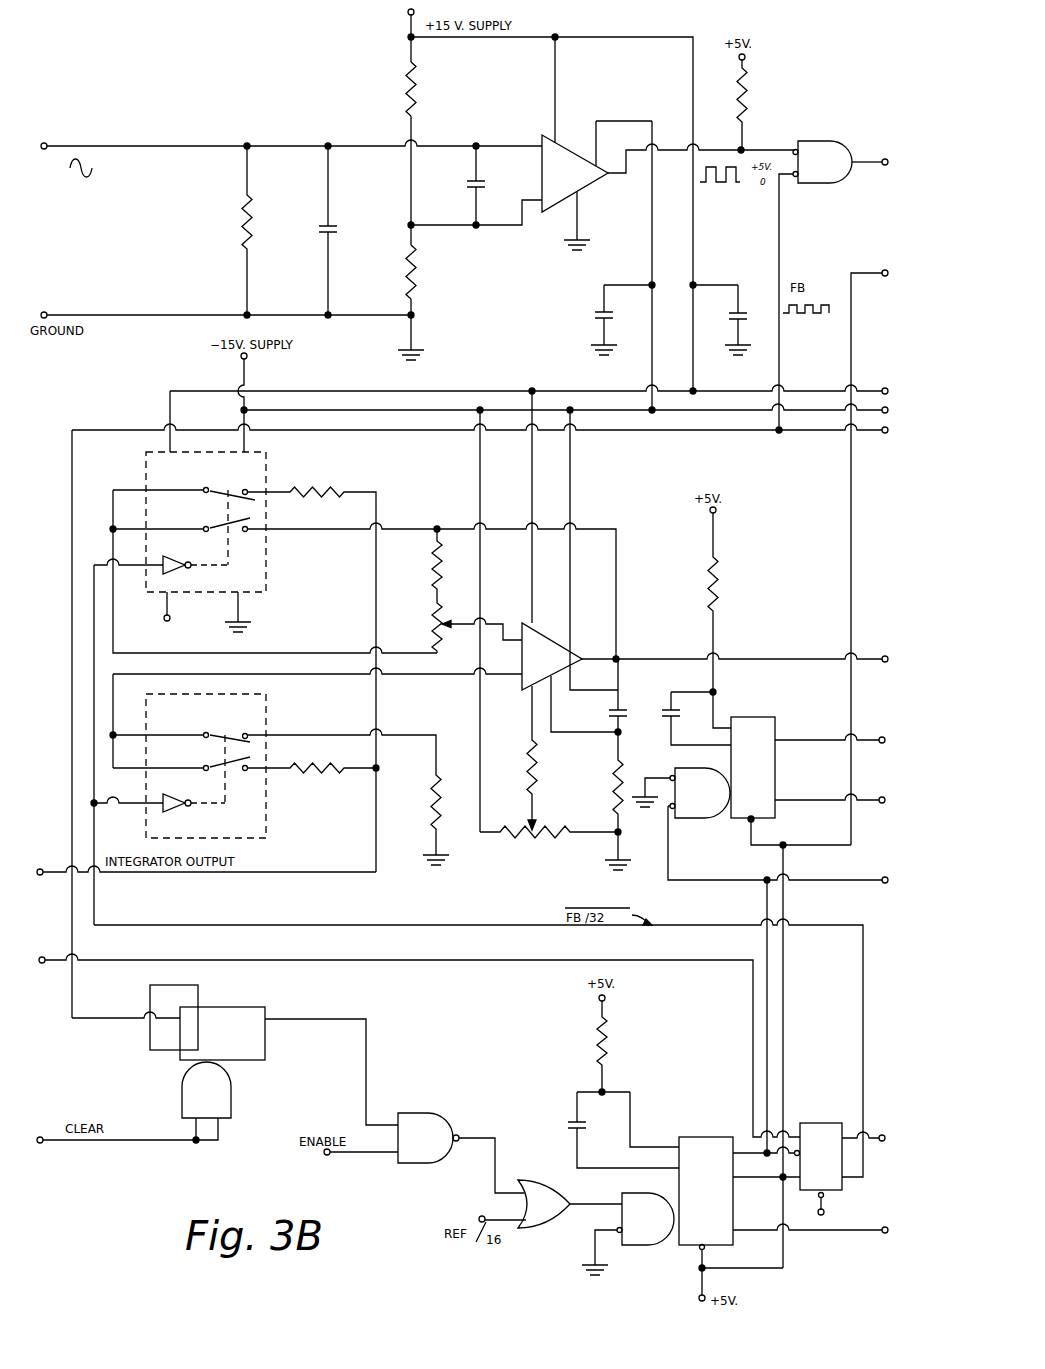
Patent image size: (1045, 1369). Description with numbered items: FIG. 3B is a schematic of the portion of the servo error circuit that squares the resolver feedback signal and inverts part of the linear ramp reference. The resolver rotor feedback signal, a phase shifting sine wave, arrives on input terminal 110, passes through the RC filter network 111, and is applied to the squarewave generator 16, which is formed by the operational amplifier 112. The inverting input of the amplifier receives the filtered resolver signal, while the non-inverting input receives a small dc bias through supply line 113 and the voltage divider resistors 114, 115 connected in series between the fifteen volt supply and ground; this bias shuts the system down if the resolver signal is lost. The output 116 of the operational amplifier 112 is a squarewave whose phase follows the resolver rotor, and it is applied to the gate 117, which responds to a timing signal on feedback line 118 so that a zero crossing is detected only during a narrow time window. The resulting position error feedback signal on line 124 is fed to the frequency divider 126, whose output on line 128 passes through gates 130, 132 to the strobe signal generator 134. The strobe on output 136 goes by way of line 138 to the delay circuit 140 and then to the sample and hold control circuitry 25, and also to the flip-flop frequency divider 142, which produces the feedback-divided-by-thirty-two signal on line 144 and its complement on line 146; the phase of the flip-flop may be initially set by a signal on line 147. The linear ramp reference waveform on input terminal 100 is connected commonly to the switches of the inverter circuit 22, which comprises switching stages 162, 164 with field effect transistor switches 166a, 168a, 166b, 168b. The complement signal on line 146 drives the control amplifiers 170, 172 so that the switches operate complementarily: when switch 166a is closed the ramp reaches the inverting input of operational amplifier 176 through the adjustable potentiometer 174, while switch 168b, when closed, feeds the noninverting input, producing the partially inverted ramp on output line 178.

The input terminal 110 is at (44, 143).
The RC filter network 111 is at (228, 202).
The operational amplifier 112 is at (568, 165).
The supply line 113 is at (344, 22).
The squarewave generator 16 is at (333, 66).
The voltage divider resistor 114 is at (415, 64).
The voltage divider resistor 115 is at (415, 278).
The output 116 is at (610, 176).
The gate 117 is at (832, 148).
The feedback line 118 is at (780, 226).
The line 124 is at (105, 430).
The inverter circuit 22 is at (355, 482).
The sample and hold control circuitry 25 is at (763, 542).
The switching stage 162 is at (266, 470).
The field effect transistor switch 166a is at (240, 490).
The field effect transistor switch 168a is at (232, 526).
The control amplifier 170 is at (178, 572).
The adjustable potentiometer 174 is at (436, 615).
The operational amplifier 176 is at (524, 684).
The output line 178 is at (614, 659).
The delay circuit 140 is at (752, 717).
The switching stage 164 is at (266, 708).
The field effect transistor switch 166b is at (240, 735).
The field effect transistor switch 168b is at (232, 766).
The control amplifier 172 is at (178, 810).
The input terminal 100 is at (43, 957).
The line 146 is at (434, 925).
The line 147 is at (328, 960).
The line 138 is at (767, 943).
The frequency divider 126 is at (240, 1025).
The line 128 is at (366, 1046).
The gate 130 is at (425, 1126).
The gate 132 is at (533, 1228).
The strobe signal generator 134 is at (705, 1137).
The output 136 is at (767, 1160).
The flip-flop frequency divider 142 is at (842, 1100).
The line 144 is at (882, 1135).